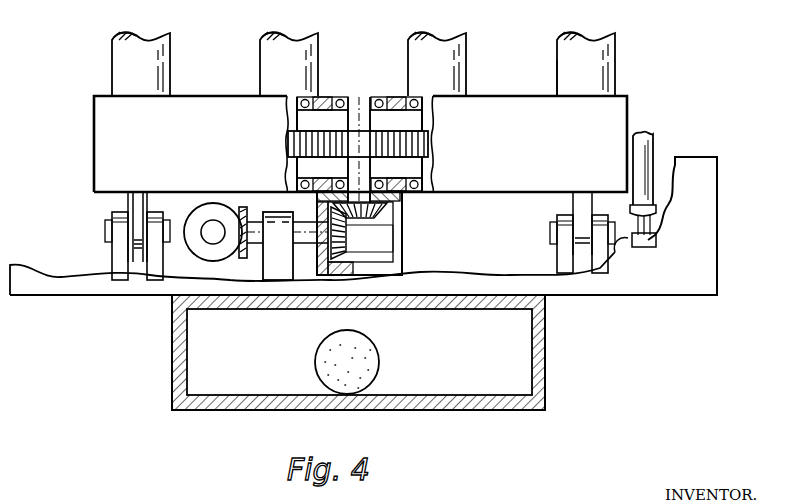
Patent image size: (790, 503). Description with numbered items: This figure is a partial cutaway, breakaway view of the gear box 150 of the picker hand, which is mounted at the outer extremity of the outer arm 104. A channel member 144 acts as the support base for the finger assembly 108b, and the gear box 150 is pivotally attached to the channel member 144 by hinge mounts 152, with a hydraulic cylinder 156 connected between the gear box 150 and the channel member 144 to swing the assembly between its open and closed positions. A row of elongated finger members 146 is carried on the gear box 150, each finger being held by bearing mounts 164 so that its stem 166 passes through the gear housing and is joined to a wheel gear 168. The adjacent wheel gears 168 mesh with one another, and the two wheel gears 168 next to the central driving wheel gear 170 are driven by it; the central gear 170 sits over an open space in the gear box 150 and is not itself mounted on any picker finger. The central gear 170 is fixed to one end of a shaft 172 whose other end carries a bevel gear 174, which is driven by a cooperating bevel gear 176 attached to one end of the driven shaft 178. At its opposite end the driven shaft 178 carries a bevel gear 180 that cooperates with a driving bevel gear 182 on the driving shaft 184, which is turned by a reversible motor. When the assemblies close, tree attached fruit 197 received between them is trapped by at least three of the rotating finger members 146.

The outer arm 104 is at (546, 345).
The finger assembly 108b is at (557, 78).
The channel member 144 is at (717, 210).
The finger members 146 is at (170, 47).
The gear box 150 is at (630, 97).
The hinge mounts 152 is at (110, 255).
The hydraulic cylinder 156 is at (656, 148).
The bearing mounts 164 is at (401, 96).
The stem 166 is at (446, 115).
The wheel gear 168 is at (289, 132).
The central driving wheel gear 170 is at (333, 158).
The shaft 172 is at (428, 160).
The bevel gear 174 is at (380, 208).
The cooperating bevel gear 176 is at (343, 256).
The driven shaft 178 is at (258, 244).
The bevel gear 180 is at (243, 207).
The driving bevel gear 182 is at (189, 213).
The driving shaft 184 is at (207, 236).
The tree attached fruit 197 is at (380, 344).